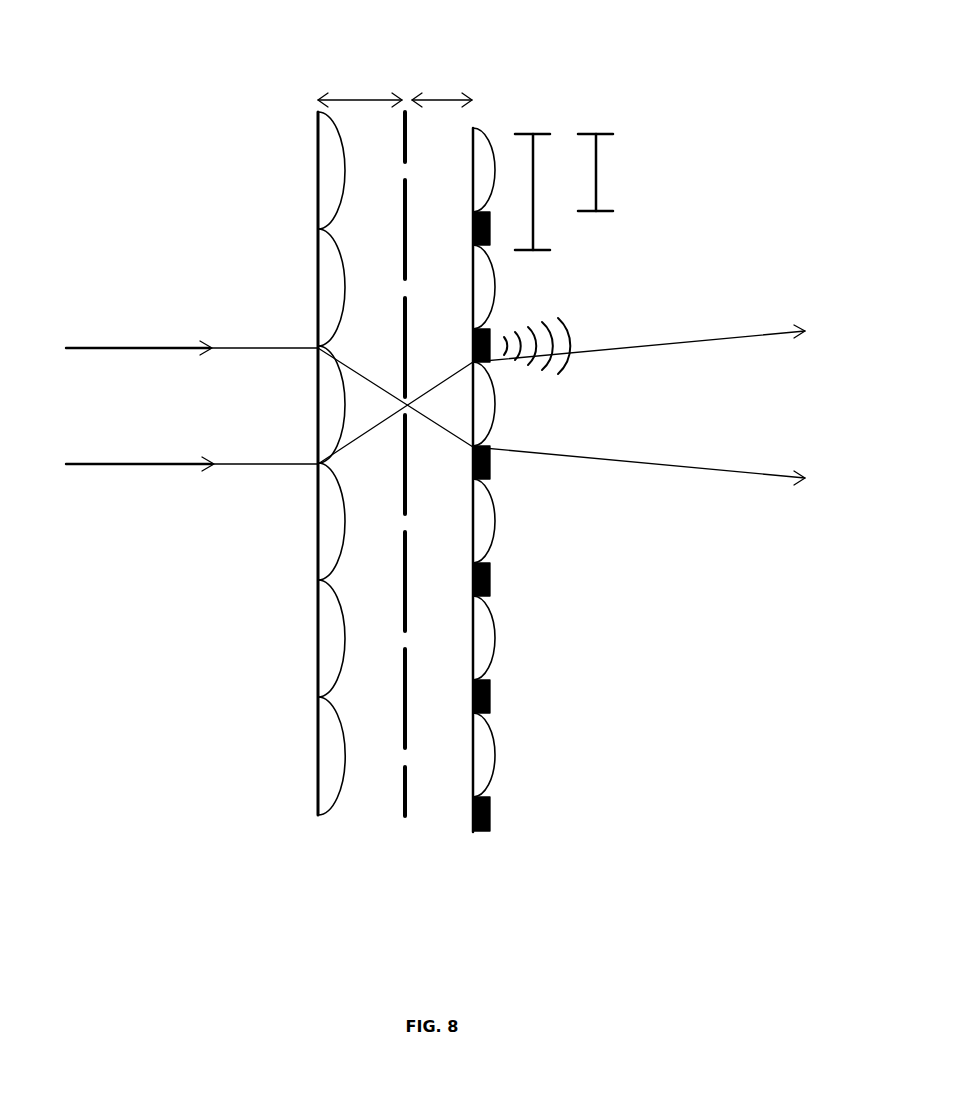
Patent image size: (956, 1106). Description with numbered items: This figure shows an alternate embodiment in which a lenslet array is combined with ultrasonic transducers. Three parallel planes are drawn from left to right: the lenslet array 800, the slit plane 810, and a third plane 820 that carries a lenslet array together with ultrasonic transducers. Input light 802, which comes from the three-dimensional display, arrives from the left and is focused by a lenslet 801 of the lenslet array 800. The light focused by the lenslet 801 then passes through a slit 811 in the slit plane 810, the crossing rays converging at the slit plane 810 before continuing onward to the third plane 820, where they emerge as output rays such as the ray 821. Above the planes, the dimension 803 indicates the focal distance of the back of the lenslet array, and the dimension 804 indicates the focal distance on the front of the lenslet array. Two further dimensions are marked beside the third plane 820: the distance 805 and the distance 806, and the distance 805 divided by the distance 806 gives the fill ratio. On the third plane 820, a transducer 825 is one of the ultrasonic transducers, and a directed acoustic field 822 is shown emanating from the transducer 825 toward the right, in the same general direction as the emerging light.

The lenslet array 800 is at (305, 835).
The lenslet 801 is at (327, 401).
The input light 802 is at (205, 462).
The focal distance of the back of lenslet array 803 is at (368, 96).
The focal distance on the front of the lenslet array 804 is at (440, 88).
The distance 805 is at (541, 192).
The distance 806 is at (604, 172).
The slit plane 810 is at (400, 835).
The slit 811 is at (411, 762).
The third plane 820 is at (488, 853).
The output light ray 821 is at (670, 475).
The directed acoustic field 822 is at (575, 320).
The transducer 825 is at (490, 335).